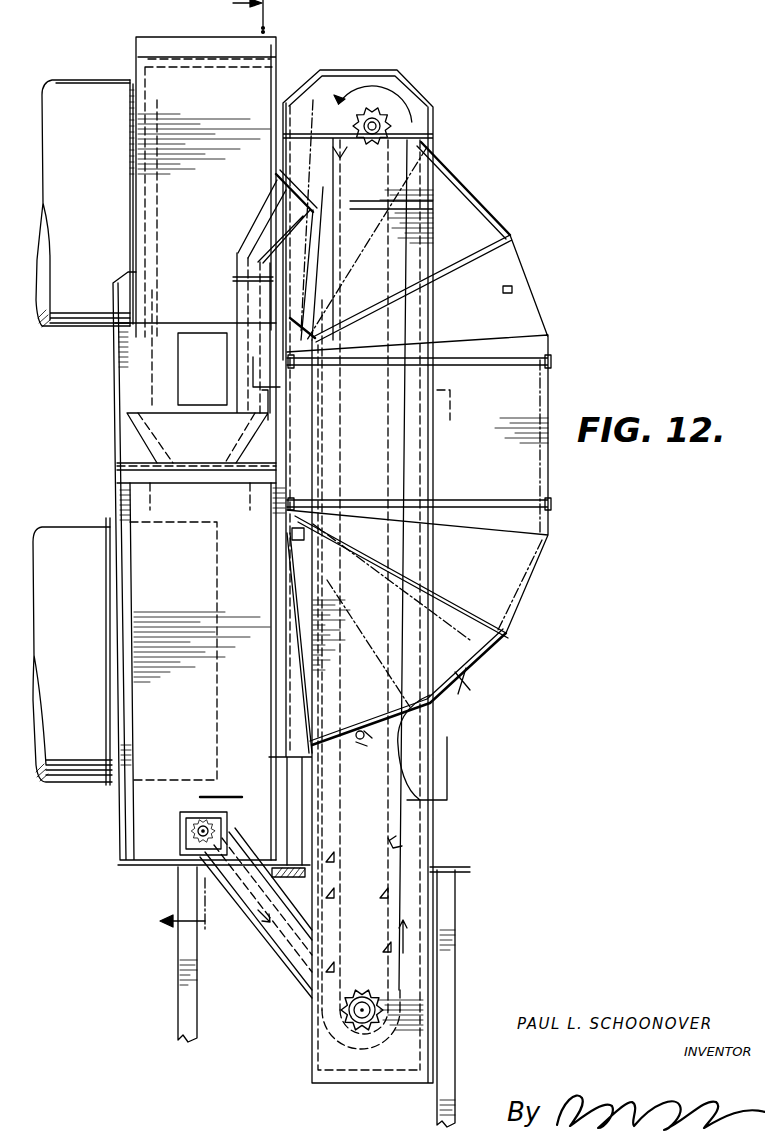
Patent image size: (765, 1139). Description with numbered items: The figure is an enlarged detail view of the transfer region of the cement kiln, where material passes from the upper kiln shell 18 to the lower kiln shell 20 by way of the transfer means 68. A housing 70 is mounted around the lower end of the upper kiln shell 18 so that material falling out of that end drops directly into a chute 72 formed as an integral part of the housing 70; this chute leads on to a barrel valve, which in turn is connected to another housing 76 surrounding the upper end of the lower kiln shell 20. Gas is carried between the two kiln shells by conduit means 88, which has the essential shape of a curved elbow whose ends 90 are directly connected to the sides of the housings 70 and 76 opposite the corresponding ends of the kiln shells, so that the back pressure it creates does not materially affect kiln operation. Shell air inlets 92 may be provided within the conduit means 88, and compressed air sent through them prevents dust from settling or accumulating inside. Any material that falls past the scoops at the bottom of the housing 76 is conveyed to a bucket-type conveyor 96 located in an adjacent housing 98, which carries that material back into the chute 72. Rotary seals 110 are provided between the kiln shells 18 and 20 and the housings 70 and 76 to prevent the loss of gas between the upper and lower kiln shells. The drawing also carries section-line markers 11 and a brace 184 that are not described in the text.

The section line 11- 11 is at (205, 476).
The upper kiln shell 18 is at (101, 60).
The lower kiln shell 20 is at (73, 507).
The transfer means 68 is at (103, 426).
The housing 70 is at (130, 184).
The chute 72 is at (222, 455).
The housing 76 is at (113, 604).
The conduit means 88 is at (540, 486).
The ends 90 is at (271, 613).
The shell air inlets 92 is at (466, 683).
The bucket-type conveyor 96 is at (396, 845).
The housing 98 is at (422, 468).
The rotary seals 110 is at (129, 118).
The brace 184 is at (512, 290).